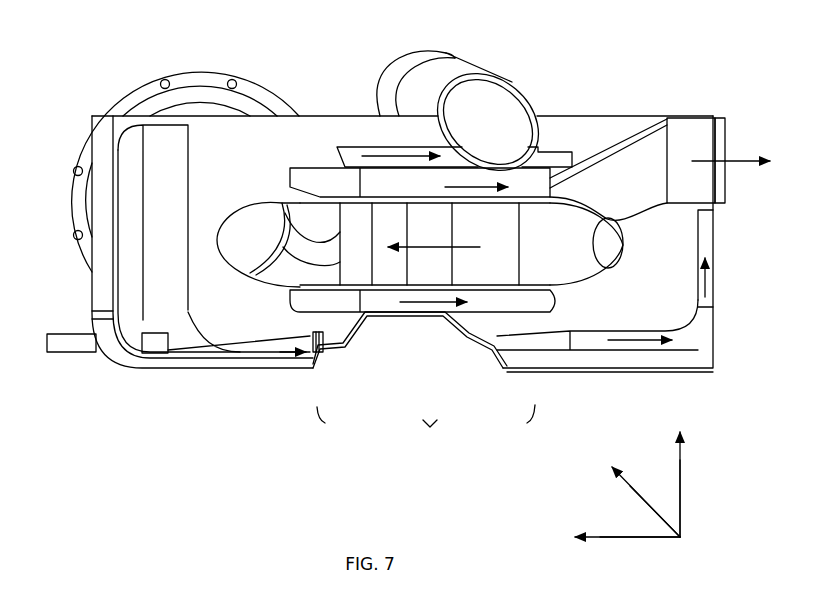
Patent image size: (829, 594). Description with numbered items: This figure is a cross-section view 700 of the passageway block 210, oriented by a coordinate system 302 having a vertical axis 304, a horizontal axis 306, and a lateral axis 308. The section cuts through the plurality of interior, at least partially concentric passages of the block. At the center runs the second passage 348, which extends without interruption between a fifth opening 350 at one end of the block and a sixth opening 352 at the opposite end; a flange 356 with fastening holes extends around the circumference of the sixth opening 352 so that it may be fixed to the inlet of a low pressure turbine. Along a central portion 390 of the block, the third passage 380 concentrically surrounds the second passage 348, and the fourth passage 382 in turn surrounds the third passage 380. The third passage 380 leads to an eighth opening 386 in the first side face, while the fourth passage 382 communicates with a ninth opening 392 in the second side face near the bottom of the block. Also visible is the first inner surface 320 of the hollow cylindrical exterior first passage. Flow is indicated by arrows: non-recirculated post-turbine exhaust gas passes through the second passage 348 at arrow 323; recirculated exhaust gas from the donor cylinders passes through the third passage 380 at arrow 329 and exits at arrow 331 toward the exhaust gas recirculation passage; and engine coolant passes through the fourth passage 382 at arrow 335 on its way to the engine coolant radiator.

The passageway block 210 is at (65, 283).
The coordinate system 302 is at (711, 444).
The vertical axis 304 is at (690, 485).
The horizontal axis 306 is at (605, 527).
The lateral axis 308 is at (630, 480).
The first inner surface 320 is at (490, 108).
The arrow 323 is at (468, 247).
The arrow 329 is at (427, 298).
The arrow 331 is at (737, 163).
The arrow 335 is at (380, 147).
The second passage 348 is at (360, 273).
The fifth opening 350 is at (607, 242).
The sixth opening 352 is at (237, 243).
The flange 356 is at (200, 72).
The third passage 380 is at (312, 186).
The fourth passage 382 is at (553, 157).
The eighth opening 386 is at (741, 138).
The central portion 390 is at (422, 418).
The ninth opening 392 is at (47, 346).
The cross-section view 700 is at (715, 72).